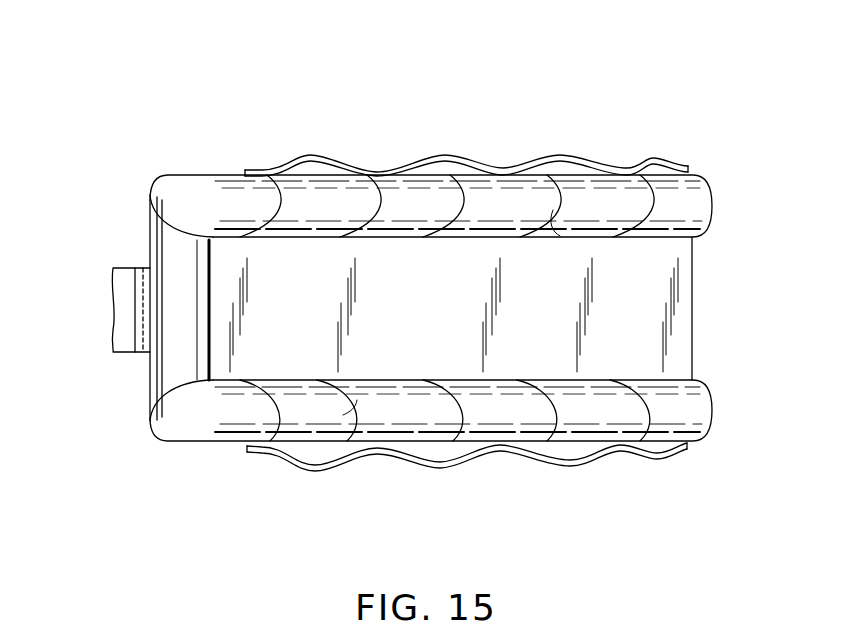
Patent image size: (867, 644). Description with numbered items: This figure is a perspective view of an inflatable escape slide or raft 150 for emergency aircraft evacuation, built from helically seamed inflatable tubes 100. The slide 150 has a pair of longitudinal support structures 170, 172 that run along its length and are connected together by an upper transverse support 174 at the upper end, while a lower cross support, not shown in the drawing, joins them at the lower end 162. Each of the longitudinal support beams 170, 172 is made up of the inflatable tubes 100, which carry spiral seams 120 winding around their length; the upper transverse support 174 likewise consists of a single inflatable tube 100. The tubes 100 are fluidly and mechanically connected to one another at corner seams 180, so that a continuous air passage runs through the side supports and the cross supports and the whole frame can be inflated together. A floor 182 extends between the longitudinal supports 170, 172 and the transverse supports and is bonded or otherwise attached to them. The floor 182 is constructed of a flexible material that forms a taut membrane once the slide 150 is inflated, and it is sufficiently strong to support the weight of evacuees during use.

The inflatable tube 100 is at (500, 198).
The spiral seam 120 is at (553, 210).
The inflatable escape slide 150 is at (128, 432).
The lower end 162 is at (686, 283).
The longitudinal support structure 170 is at (410, 203).
The longitudinal support structure 172 is at (297, 420).
The upper transverse support 174 is at (172, 235).
The corner seam 180 is at (178, 217).
The floor 182 is at (450, 322).